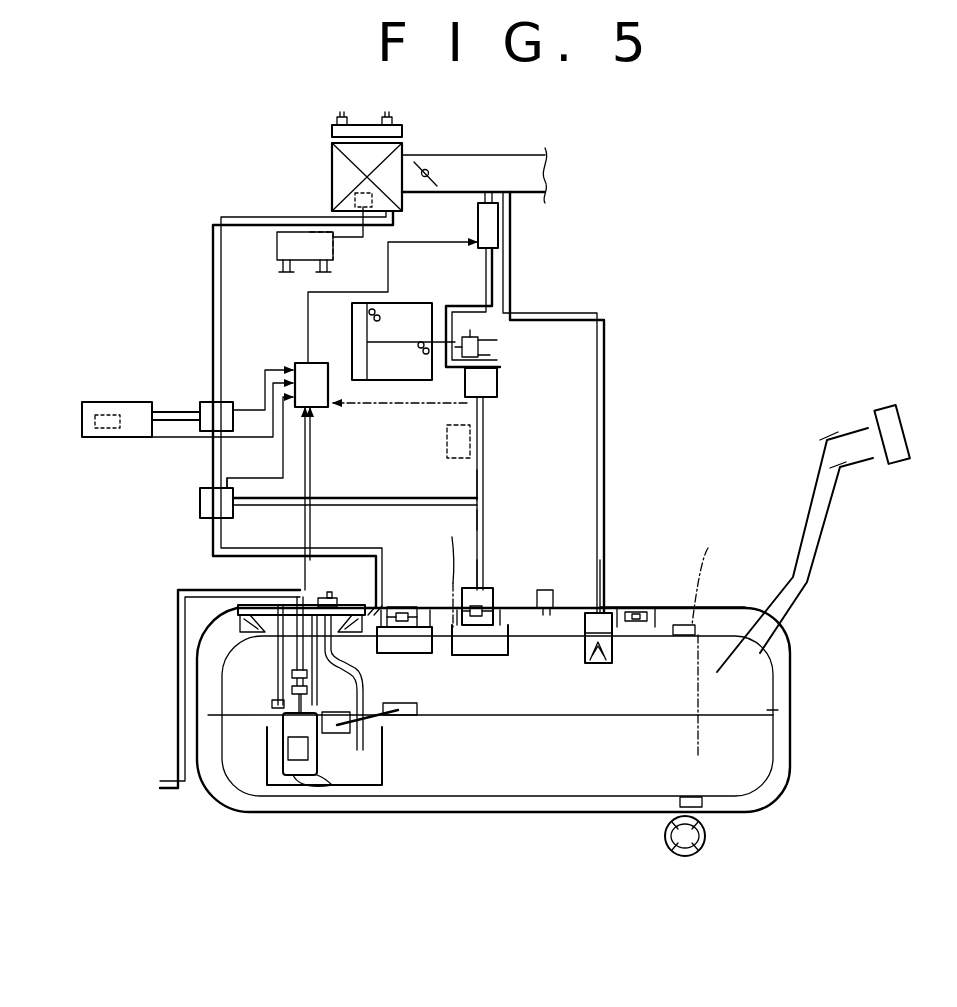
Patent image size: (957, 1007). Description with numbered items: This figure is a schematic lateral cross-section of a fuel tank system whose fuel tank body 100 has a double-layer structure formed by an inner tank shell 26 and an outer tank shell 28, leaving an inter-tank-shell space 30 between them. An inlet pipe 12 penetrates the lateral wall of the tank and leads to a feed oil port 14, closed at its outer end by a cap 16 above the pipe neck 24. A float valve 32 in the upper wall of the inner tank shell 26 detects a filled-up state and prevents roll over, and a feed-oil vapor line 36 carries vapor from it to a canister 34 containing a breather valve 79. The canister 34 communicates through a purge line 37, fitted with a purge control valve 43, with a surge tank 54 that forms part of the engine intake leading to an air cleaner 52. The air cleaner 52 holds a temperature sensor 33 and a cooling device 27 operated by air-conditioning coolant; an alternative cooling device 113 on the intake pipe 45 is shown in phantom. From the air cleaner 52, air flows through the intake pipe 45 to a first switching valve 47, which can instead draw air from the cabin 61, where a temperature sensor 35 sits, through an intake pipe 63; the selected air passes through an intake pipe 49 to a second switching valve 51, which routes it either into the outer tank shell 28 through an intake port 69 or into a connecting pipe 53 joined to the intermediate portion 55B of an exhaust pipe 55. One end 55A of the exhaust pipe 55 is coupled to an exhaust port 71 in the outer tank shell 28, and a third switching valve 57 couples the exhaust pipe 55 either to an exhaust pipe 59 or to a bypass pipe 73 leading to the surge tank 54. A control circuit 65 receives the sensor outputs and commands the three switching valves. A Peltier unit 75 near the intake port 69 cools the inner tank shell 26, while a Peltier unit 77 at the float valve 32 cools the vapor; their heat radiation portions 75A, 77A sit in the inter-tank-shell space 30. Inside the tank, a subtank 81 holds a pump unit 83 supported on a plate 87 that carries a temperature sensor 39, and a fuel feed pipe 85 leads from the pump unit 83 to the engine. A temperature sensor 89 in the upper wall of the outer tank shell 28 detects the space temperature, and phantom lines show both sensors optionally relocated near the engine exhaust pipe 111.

The inlet pipe 12 is at (825, 557).
The feed oil port 14 is at (820, 503).
The filler cap 16 is at (900, 463).
The filler pipe breather 24 is at (833, 520).
The inner tank shell 26 is at (777, 755).
The cooling device 27 is at (332, 131).
The outer tank shell 28 is at (790, 713).
The inter-tank-shell space 30 is at (779, 768).
The float valve 32 is at (613, 648).
The temperature sensor 33 is at (355, 199).
The canister 34 is at (412, 300).
The temperature sensor 35 is at (97, 430).
The feed-oil vapor line 36 is at (603, 575).
The purge line 37 is at (488, 302).
The temperature sensor 39 is at (330, 587).
The purge control valve 43 is at (478, 228).
The intake pipe 45 is at (222, 330).
The first switching valve 47 is at (222, 398).
The intake pipe 49 is at (238, 462).
The second switching valve 51 is at (200, 503).
The air cleaner 52 is at (402, 157).
The connecting pipe 53 is at (372, 500).
The surge tank 54 is at (488, 156).
The exhaust pipe 55 is at (500, 470).
The one end of exhaust pipe 55A is at (483, 587).
The intermediate portion of exhaust pipe 55B is at (484, 522).
The third switching valve 57 is at (490, 400).
The exhaust pipe 59 is at (497, 383).
The cabin 61 is at (127, 402).
The intake pipe 63 is at (198, 408).
The control circuit 65 is at (300, 362).
The intake port 69 is at (407, 584).
The exhaust port 71 is at (494, 598).
The bypass pipe 73 is at (512, 297).
The Peltier unit 75 is at (430, 653).
The heat radiation portion 75A is at (447, 440).
The Peltier unit 77 is at (655, 627).
The heat radiation portion 77A is at (660, 610).
The breather valve 79 is at (478, 347).
The subtank 81 is at (390, 738).
The pump unit 83 is at (271, 711).
The fuel feed pipe 85 is at (178, 700).
The plate 87 is at (362, 603).
The temperature sensor 89 is at (552, 590).
The fuel tank body 100 is at (726, 606).
The exhaust pipe of the engine 111 is at (705, 836).
The cooling device 113 is at (333, 247).